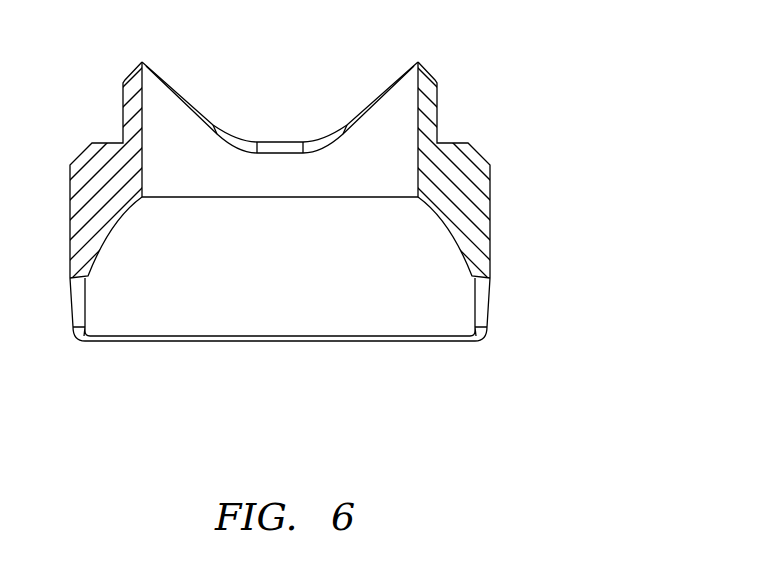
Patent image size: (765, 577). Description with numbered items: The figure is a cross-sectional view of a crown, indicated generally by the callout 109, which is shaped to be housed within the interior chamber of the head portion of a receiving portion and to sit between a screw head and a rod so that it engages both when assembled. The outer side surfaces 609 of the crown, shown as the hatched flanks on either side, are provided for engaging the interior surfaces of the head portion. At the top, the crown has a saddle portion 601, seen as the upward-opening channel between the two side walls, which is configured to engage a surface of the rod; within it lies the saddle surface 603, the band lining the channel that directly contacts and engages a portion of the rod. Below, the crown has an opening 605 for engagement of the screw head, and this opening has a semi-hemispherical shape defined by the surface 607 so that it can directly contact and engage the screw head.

The spring seat assembly 109 is at (525, 48).
The saddle portion 601 is at (165, 102).
The saddle surface 603 is at (232, 133).
The opening 605 is at (335, 402).
The surface 607 is at (473, 305).
The side surfaces 609 is at (492, 234).